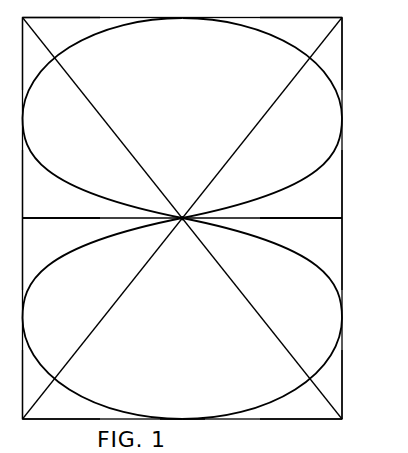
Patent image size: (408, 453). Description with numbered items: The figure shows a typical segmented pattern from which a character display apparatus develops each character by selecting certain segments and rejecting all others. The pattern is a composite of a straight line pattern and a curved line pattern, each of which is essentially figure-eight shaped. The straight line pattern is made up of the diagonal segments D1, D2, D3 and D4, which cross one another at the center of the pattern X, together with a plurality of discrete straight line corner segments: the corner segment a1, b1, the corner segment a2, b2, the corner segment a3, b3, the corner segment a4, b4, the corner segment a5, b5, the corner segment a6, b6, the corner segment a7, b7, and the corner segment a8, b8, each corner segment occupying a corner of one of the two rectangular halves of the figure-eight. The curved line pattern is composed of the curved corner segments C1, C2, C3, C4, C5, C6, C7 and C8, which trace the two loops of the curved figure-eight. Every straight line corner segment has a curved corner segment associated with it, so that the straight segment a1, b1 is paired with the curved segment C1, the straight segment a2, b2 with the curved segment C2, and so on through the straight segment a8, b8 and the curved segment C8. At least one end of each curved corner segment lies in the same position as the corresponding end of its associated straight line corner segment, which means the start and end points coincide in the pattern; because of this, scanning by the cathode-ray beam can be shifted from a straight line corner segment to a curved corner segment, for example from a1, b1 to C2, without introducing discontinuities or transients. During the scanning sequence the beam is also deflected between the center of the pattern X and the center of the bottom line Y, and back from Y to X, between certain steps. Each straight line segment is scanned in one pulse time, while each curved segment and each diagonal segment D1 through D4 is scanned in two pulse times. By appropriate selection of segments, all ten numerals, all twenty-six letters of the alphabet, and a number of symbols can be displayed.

The straight line corner segment a1 is at (83, 217).
The straight line corner segment a2 is at (24, 72).
The straight line corner segment a3 is at (278, 20).
The straight line corner segment a4 is at (341, 172).
The straight line corner segment a5 is at (80, 418).
The straight line corner segment a6 is at (24, 267).
The straight line corner segment a7 is at (280, 225).
The straight line corner segment a8 is at (341, 398).
The straight line corner segment b1 is at (24, 200).
The straight line corner segment b2 is at (88, 19).
The straight line corner segment b3 is at (341, 78).
The straight line corner segment b4 is at (325, 217).
The straight line corner segment b5 is at (24, 394).
The straight line corner segment b6 is at (42, 223).
The straight line corner segment b7 is at (341, 270).
The straight line corner segment b8 is at (322, 418).
The curved corner segment C1 is at (48, 169).
The curved corner segment C2 is at (82, 47).
The curved corner segment C3 is at (290, 49).
The curved corner segment C4 is at (317, 172).
The curved corner segment C5 is at (120, 407).
The curved corner segment C6 is at (60, 261).
The curved corner segment C7 is at (313, 268).
The curved corner segment C8 is at (285, 390).
The diagonal segment D1 is at (118, 133).
The diagonal segment D2 is at (247, 137).
The diagonal segment D3 is at (264, 326).
The diagonal segment D4 is at (99, 323).
The center of the pattern X is at (183, 223).
The center of the bottom line of the pattern Y is at (180, 418).